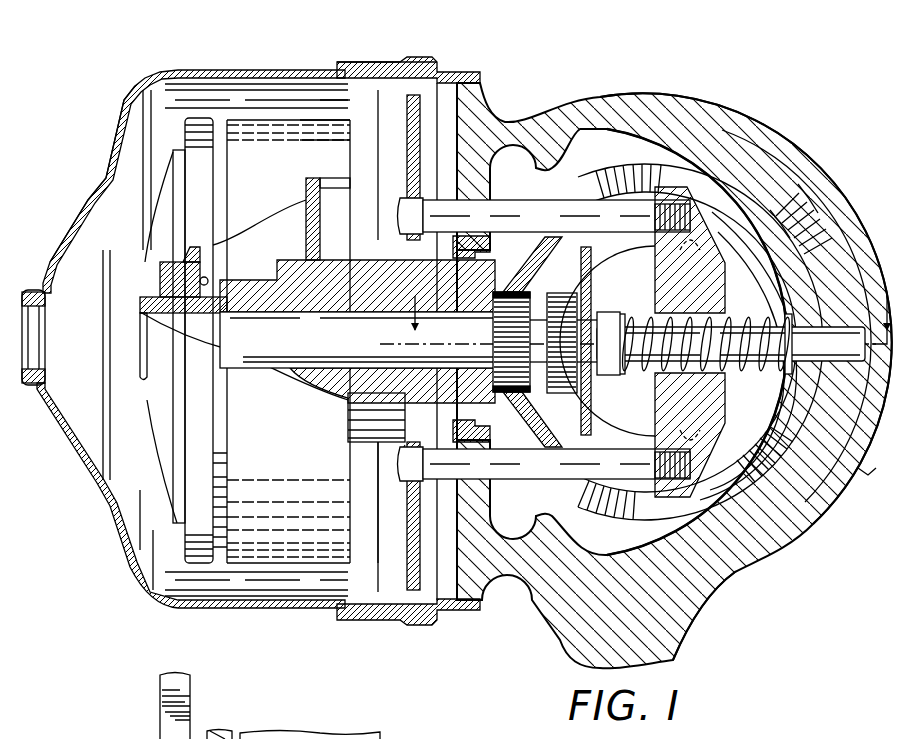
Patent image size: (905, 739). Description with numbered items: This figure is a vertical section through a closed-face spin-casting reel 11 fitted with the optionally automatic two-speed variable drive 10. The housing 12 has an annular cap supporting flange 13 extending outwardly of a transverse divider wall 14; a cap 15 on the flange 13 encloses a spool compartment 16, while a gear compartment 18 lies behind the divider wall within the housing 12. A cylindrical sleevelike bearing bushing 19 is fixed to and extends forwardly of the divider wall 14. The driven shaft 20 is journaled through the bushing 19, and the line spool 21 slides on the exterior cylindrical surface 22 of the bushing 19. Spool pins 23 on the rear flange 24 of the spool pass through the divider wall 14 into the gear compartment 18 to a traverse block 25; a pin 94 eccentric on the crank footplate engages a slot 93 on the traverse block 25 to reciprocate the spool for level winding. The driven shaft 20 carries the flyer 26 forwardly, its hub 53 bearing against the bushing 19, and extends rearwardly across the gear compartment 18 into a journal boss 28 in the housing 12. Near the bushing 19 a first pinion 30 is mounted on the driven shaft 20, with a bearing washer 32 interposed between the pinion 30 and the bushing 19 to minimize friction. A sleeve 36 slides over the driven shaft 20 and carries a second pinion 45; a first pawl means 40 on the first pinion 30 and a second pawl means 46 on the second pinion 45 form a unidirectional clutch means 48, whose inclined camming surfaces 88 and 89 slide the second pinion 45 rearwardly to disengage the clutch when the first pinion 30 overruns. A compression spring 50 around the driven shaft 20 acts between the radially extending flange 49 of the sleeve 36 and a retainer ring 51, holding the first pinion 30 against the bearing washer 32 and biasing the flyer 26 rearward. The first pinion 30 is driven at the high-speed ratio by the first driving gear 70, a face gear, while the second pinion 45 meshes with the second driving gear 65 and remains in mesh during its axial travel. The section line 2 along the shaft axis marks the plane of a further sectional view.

The section line 2- 2 is at (633, 335).
The variable drive 10 is at (651, 112).
The spin-casting reel 11 is at (756, 124).
The housing 12 is at (788, 152).
The annular cap supporting flange 13 is at (353, 62).
The transverse divider wall 14 is at (496, 490).
The cap 15 is at (212, 70).
The spool compartment 16 is at (137, 152).
The gear compartment 18 is at (617, 548).
The bearing bushing 19 is at (368, 294).
The driven shaft 20 is at (332, 342).
The line spool 21 is at (302, 208).
The exterior cylindrical surface 22 is at (277, 255).
The spool pins 23 is at (556, 224).
The rear flange 24 is at (410, 568).
The traverse block 25 is at (699, 344).
The flyer 26 is at (282, 456).
The journal boss 28 is at (858, 470).
The first pinion 30 is at (460, 262).
The bearing washer 32 is at (440, 402).
The sleeve 36 is at (619, 324).
The first pawl means 40 is at (498, 326).
The second pinion 45 is at (586, 437).
The second pawl means 46 is at (562, 398).
The unidirectional clutch means 48 is at (556, 291).
The radially extending flange 49 is at (626, 376).
The compression spring 50 is at (768, 458).
The retainer ring 51 is at (758, 378).
The hub 53 is at (190, 298).
The second driving gear 65 is at (814, 520).
The first driving gear 70 is at (806, 200).
The inclined camming surfaces 88 is at (553, 304).
The inclined camming surfaces 89 is at (497, 426).
The slot 93 is at (688, 300).
The pin 94 is at (708, 388).